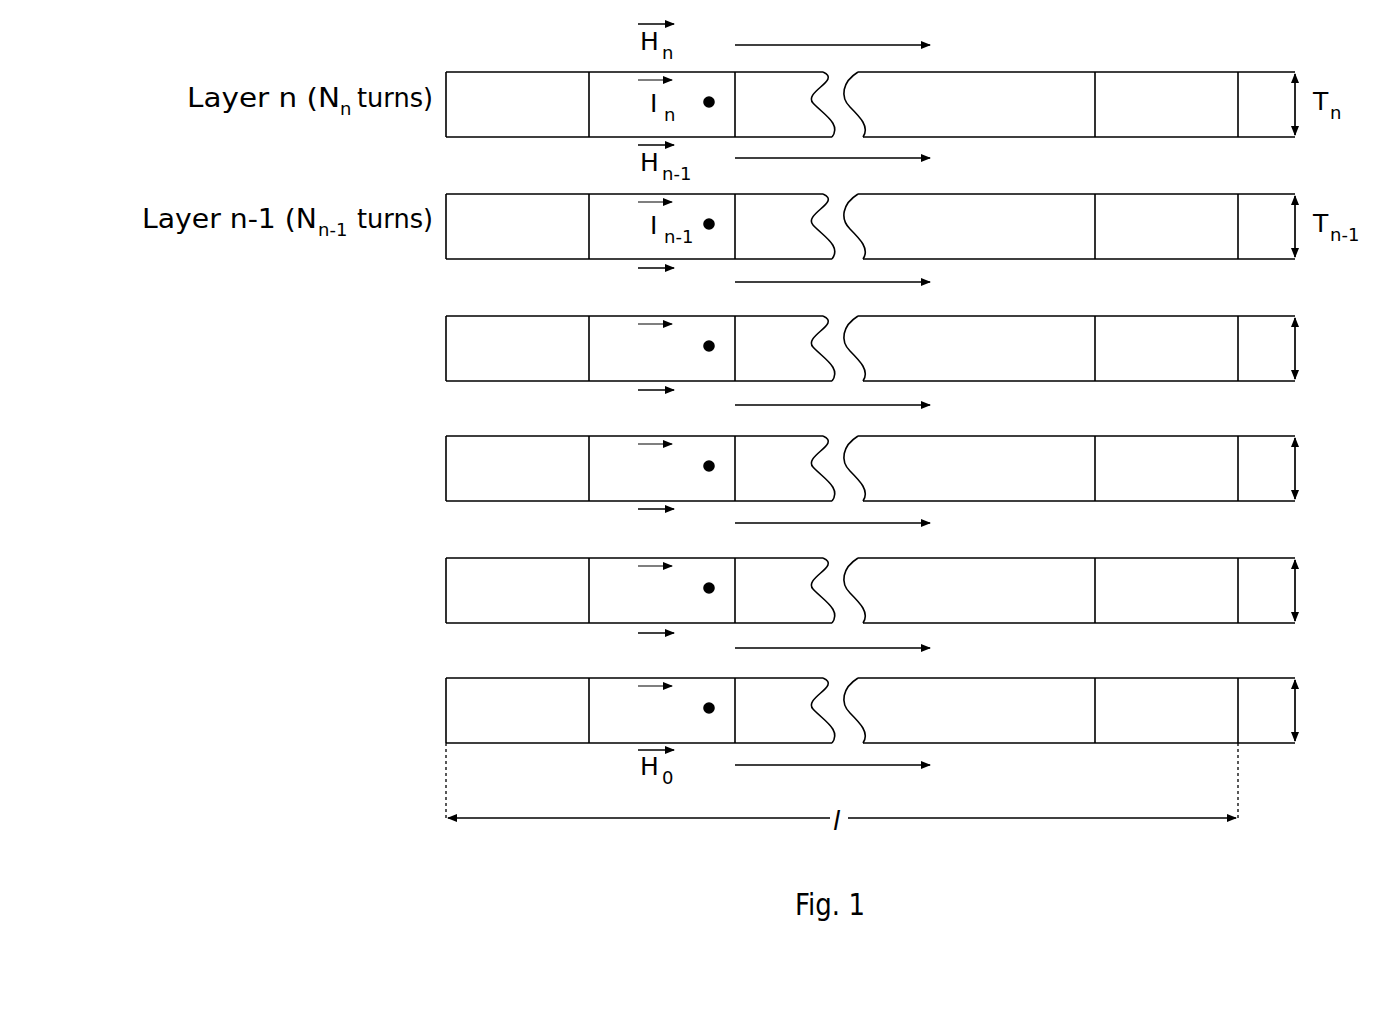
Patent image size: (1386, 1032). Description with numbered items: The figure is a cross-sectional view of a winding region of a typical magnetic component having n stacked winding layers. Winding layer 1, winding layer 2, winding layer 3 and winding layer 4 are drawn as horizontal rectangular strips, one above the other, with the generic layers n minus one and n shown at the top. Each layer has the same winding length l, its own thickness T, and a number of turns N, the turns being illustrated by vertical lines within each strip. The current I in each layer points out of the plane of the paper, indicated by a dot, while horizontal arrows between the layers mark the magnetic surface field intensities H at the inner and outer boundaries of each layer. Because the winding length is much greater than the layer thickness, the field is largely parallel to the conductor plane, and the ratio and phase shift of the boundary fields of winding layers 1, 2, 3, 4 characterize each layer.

The winding layer 1 is at (764, 714).
The winding layer 2 is at (764, 585).
The winding layer 3 is at (764, 455).
The winding layer 4 is at (764, 327).